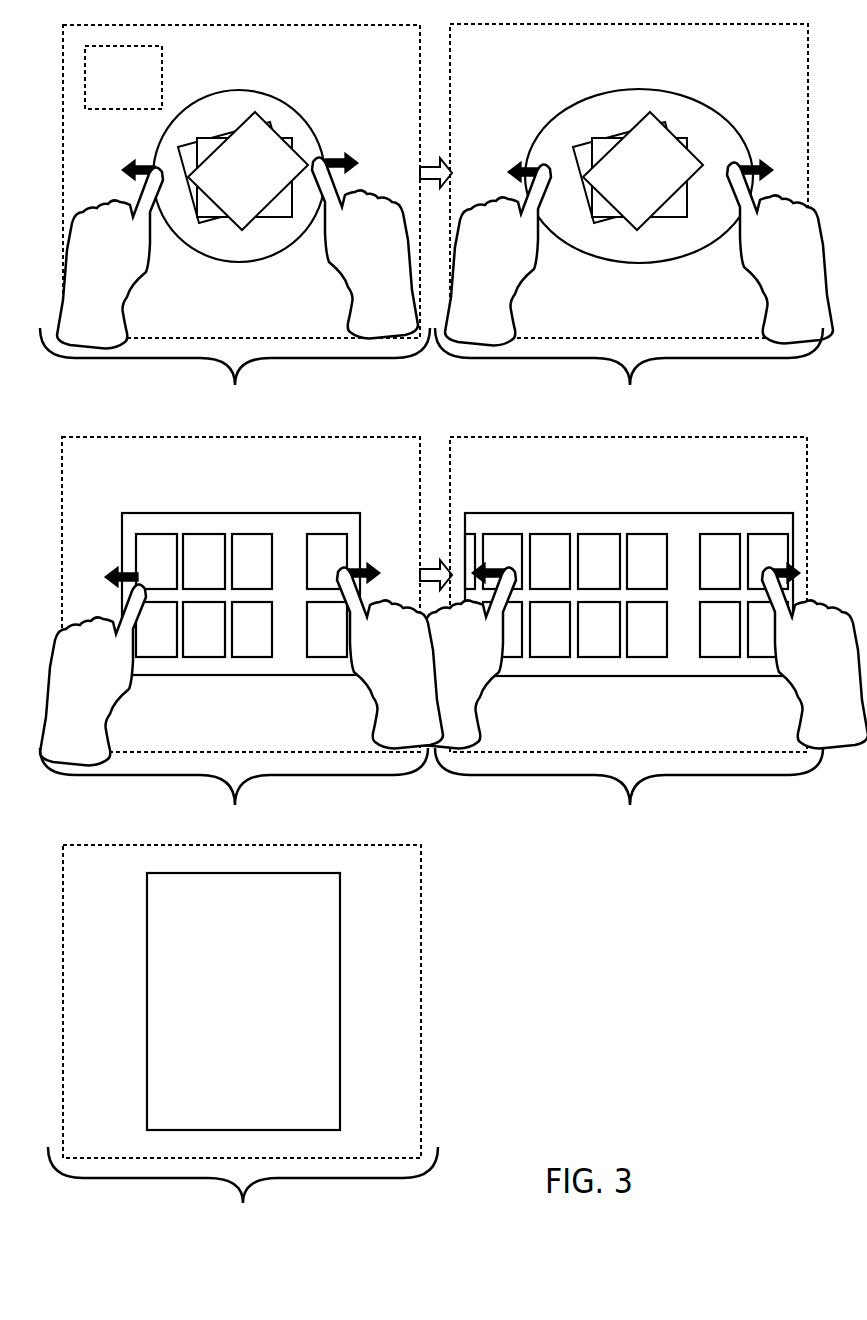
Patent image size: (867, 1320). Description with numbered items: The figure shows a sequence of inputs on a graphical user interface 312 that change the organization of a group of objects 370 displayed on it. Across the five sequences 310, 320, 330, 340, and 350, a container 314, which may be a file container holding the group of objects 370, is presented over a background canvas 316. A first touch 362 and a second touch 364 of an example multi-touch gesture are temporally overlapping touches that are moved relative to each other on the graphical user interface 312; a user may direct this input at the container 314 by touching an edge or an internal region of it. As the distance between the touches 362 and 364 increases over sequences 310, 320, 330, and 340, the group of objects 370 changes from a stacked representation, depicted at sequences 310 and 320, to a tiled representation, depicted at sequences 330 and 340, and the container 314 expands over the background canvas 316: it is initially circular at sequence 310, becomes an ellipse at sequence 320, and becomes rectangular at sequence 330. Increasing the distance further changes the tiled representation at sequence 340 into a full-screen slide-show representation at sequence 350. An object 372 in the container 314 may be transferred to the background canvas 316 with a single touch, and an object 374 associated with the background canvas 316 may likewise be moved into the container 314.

The sequence 310 is at (235, 370).
The sequence 320 is at (629, 370).
The sequence 330 is at (234, 790).
The sequence 340 is at (629, 790).
The sequence 350 is at (243, 1189).
The graphical user interface 312 is at (375, 59).
The container 314 is at (283, 90).
The background canvas 316 is at (225, 297).
The first touch 362 is at (95, 266).
The second touch 364 is at (364, 254).
The group of objects 370 is at (232, 108).
The object 372 is at (234, 178).
The object 374 is at (112, 87).